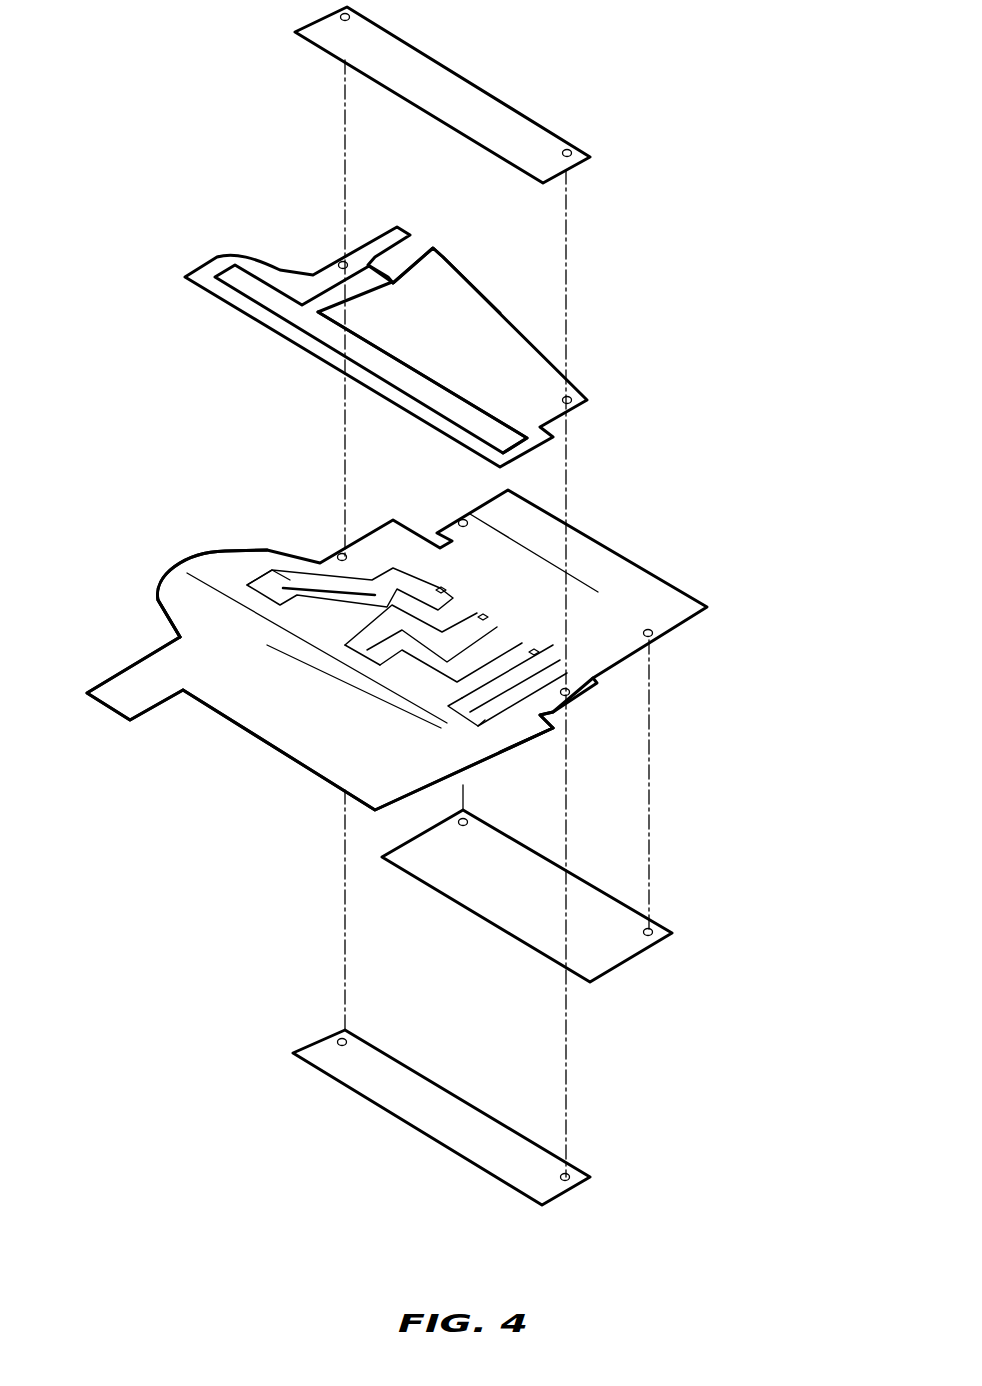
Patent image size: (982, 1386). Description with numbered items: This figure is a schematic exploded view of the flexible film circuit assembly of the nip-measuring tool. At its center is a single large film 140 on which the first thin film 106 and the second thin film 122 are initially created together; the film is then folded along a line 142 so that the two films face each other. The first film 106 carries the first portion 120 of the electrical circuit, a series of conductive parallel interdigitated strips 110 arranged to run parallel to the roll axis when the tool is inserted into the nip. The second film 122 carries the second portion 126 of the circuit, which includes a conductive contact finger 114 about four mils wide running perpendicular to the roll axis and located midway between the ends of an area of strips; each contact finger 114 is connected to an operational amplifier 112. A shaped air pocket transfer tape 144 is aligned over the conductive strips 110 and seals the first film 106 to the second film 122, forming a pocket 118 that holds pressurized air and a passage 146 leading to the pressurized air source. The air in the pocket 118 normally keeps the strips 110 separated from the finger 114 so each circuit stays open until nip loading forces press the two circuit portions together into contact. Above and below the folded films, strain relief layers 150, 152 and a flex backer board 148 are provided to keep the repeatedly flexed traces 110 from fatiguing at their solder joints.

The first thin member or film 106 is at (545, 732).
The conductive parallel interdigitated strips 110 is at (250, 586).
The operational amplifier 112 is at (446, 588).
The conductive contact finger 114 is at (205, 622).
The pocket 118 is at (438, 395).
The first portion of the electrical circuit 120 is at (266, 562).
The second thin member or film 122 is at (240, 713).
The second portion of the electrical circuit 126 is at (267, 643).
The single large film 140 is at (626, 674).
The line 142 is at (183, 570).
The shaped air pocket transfer tape 144 is at (210, 254).
The passage 146 is at (411, 250).
The flex backer board 148 is at (637, 896).
The strain relief layer 150 is at (453, 88).
The strain relief layer 152 is at (440, 1107).